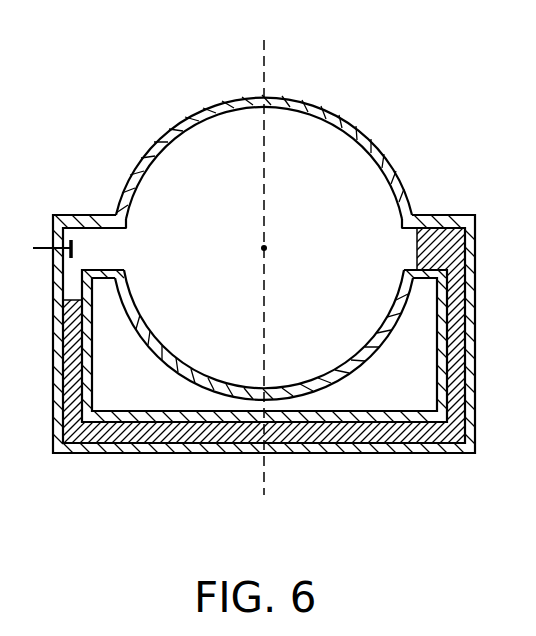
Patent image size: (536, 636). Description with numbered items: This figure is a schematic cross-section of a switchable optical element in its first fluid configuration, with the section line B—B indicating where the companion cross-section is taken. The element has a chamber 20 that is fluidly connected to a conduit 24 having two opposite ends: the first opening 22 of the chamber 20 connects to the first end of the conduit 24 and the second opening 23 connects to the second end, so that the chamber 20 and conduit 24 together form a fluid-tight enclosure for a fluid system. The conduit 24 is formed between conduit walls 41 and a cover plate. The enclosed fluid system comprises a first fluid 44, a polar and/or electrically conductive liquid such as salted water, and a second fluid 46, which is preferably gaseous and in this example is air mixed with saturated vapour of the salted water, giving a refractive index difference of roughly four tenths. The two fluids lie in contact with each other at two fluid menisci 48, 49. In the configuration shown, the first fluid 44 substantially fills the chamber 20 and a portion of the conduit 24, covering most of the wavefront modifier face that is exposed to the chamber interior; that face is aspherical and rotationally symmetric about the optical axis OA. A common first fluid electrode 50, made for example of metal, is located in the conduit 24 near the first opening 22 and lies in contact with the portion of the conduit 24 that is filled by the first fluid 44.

The chamber 20 is at (348, 145).
The first fluid 44 is at (167, 158).
The first opening 22 is at (112, 243).
The second opening 23 is at (416, 249).
The fluid meniscus 49 is at (443, 228).
The first fluid electrode 50 is at (56, 238).
The fluid meniscus 48 is at (56, 294).
The conduit 24 is at (92, 445).
The second fluid 46 is at (153, 443).
The conduit walls 41 is at (372, 455).
The optical axis OA is at (264, 248).
The section line B— B is at (262, 267).